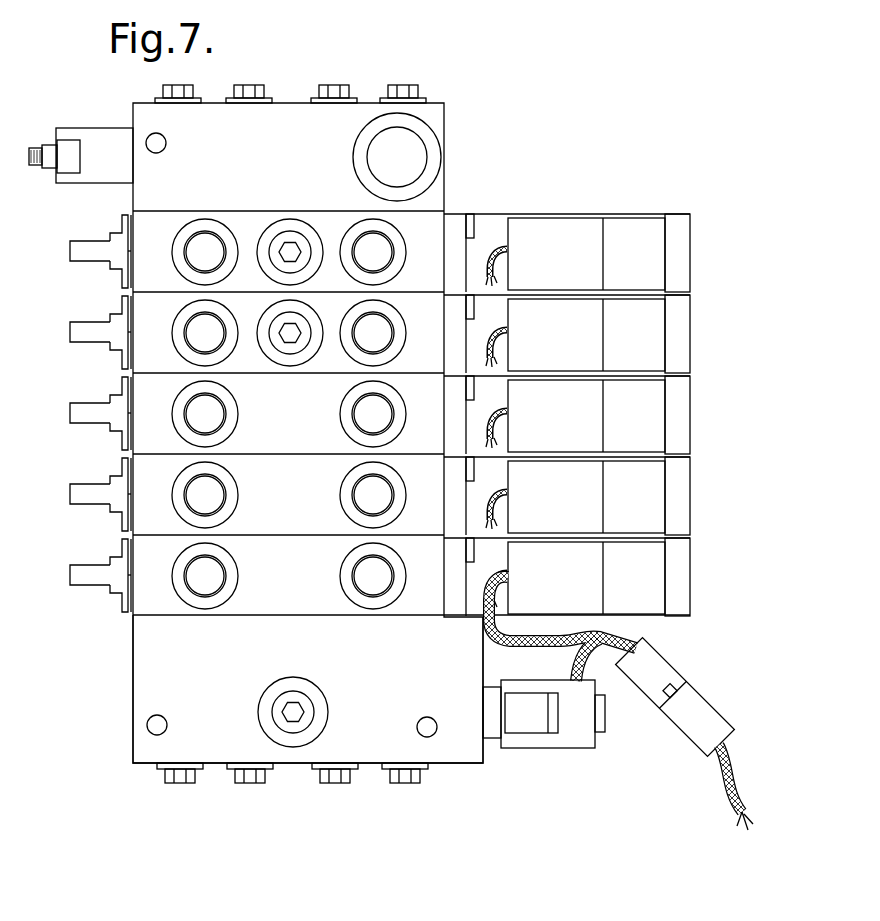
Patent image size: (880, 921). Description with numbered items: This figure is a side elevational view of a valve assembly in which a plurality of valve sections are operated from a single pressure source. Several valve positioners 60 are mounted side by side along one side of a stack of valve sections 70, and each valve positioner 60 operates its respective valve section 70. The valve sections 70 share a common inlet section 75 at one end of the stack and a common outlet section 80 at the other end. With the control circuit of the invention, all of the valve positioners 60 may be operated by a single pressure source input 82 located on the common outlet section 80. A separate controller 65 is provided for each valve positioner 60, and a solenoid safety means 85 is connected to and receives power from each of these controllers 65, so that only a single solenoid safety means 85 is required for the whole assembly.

The valve positioner 60 is at (668, 400).
The controller 65 is at (692, 698).
The valve section 70 is at (156, 318).
The common inlet section 75 is at (158, 185).
The common outlet section 80 is at (456, 749).
The single pressure source input 82 is at (298, 707).
The solenoid safety means 85 is at (569, 741).